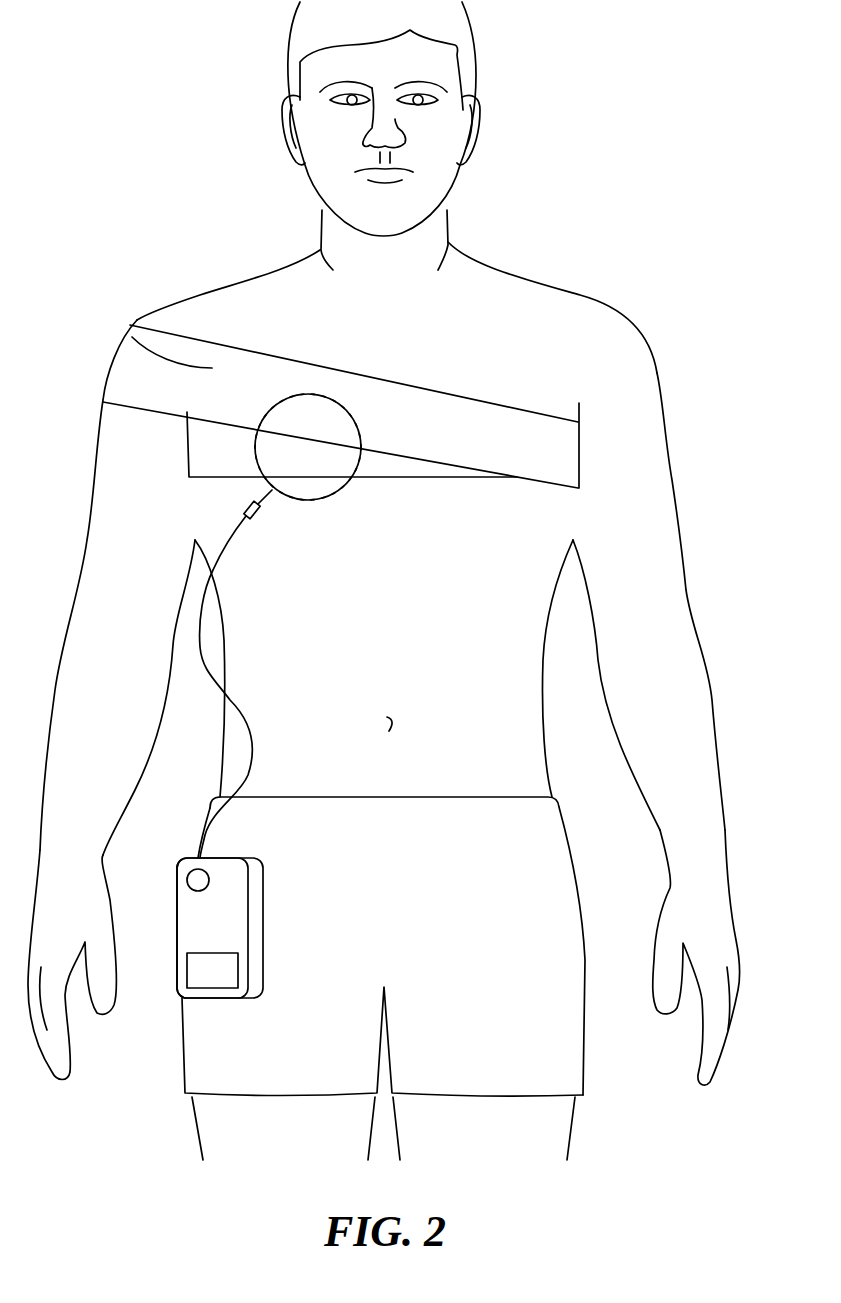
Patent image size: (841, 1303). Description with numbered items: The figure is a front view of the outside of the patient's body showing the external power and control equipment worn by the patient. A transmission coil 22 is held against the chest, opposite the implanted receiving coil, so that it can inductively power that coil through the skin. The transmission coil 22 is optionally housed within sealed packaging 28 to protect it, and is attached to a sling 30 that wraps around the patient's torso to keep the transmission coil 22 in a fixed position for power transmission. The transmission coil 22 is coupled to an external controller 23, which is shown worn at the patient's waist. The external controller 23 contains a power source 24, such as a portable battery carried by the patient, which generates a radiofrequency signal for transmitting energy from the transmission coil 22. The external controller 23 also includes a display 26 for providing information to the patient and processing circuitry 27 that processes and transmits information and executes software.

The transmission coil 22 is at (314, 415).
The external controller 23 is at (257, 862).
The power source 24 is at (200, 940).
The display 26 is at (217, 972).
The processing circuitry 27 is at (203, 886).
The sealed packaging 28 is at (310, 480).
The sling 30 is at (130, 337).